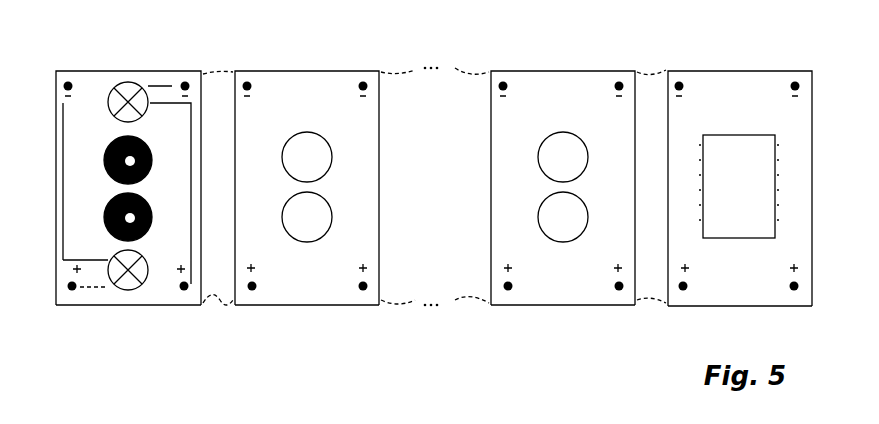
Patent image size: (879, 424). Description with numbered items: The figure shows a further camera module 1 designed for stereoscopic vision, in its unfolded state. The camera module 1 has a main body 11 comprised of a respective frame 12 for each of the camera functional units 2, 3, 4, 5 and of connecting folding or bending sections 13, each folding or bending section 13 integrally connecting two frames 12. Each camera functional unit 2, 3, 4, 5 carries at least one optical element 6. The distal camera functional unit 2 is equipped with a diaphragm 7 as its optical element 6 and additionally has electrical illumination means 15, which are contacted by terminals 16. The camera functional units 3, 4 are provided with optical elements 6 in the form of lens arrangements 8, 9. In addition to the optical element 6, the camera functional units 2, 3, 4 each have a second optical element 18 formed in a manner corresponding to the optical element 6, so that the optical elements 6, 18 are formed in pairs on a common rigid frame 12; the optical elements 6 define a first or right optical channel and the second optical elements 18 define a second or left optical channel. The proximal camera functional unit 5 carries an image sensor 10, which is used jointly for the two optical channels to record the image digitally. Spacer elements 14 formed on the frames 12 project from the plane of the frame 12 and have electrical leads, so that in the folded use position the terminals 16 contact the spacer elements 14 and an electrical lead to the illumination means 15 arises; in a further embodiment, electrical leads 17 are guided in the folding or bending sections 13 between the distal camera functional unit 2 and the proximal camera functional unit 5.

The camera module 1 is at (220, 343).
The camera functional unit 2 is at (98, 323).
The camera functional unit 3 is at (308, 320).
The camera functional unit 4 is at (563, 322).
The camera functional unit 5 is at (707, 323).
The optical element 6 is at (104, 130).
The diaphragm 7 is at (152, 147).
The lens arrangement 8 is at (310, 146).
The lens arrangement 9 is at (572, 147).
The image sensor 10 is at (748, 150).
The main body 11 is at (524, 95).
The frame 12 is at (153, 294).
The folding or bending section 13 is at (217, 300).
The spacer element 14 is at (248, 80).
The illumination means 15 is at (133, 83).
The terminal 16 is at (68, 81).
The electrical lead 17 is at (170, 84).
The second optical element 18 is at (100, 226).